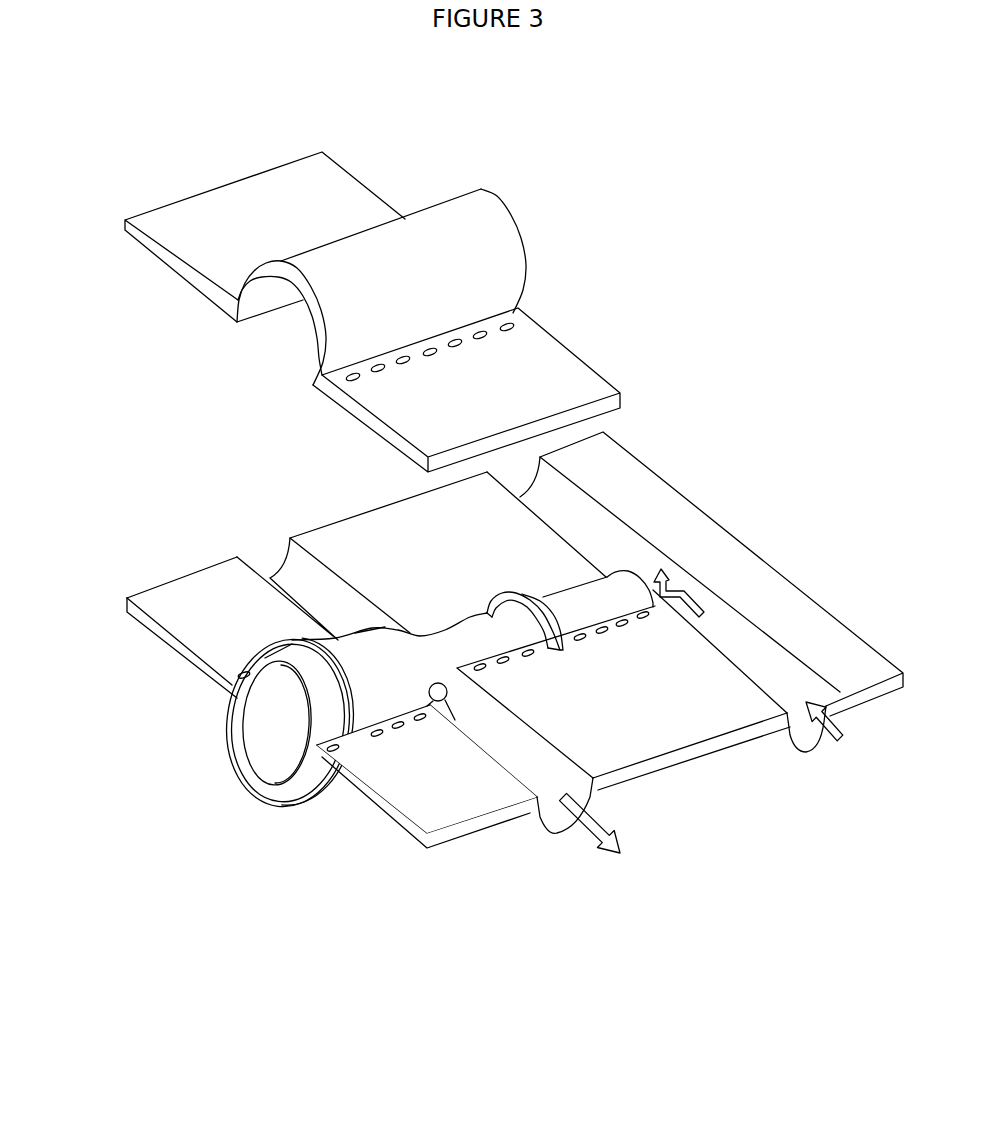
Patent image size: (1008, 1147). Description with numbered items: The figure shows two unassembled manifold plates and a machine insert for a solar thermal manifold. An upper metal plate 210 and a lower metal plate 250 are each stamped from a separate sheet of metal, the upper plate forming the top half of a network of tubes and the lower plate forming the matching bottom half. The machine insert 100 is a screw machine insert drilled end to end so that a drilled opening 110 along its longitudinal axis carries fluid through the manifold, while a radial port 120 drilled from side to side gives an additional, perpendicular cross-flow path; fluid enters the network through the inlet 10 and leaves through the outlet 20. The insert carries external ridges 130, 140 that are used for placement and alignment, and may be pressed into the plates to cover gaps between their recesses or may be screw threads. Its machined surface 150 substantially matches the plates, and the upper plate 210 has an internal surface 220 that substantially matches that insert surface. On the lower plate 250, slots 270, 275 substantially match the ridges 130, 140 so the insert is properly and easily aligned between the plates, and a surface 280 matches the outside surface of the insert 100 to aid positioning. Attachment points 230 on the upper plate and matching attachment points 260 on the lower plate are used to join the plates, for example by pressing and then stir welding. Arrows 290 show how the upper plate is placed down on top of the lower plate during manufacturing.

The inlet 10 is at (840, 749).
The outlet 20 is at (592, 828).
The machine insert 100 is at (622, 584).
The drilled opening 110 is at (268, 750).
The port 120 is at (450, 708).
The external ridge 130 is at (265, 658).
The external ridge 140 is at (565, 640).
The surface 150 is at (356, 639).
The upper metal plate 210 is at (601, 365).
The internal surface 220 is at (272, 295).
The attachment points 230 is at (455, 343).
The lower metal plate 250 is at (795, 558).
The attachment points 260 is at (405, 722).
The slot 270 is at (330, 745).
The slot 275 is at (560, 645).
The surface 280 is at (235, 752).
The arrows 290 is at (145, 245).